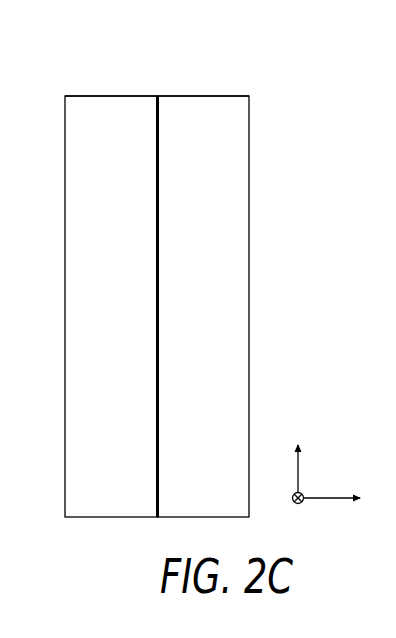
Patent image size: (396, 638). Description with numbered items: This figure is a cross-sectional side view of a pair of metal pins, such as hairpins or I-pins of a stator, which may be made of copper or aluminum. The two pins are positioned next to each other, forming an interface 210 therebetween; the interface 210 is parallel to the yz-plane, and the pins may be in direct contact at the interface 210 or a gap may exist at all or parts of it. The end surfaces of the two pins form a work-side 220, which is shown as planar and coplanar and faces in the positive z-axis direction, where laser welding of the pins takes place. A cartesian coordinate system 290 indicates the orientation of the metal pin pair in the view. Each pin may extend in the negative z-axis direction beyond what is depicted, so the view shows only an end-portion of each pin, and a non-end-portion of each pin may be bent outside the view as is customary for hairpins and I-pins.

The interface 210 is at (158, 216).
The work-side 220 is at (188, 87).
The cartesian coordinate system 290 is at (322, 517).